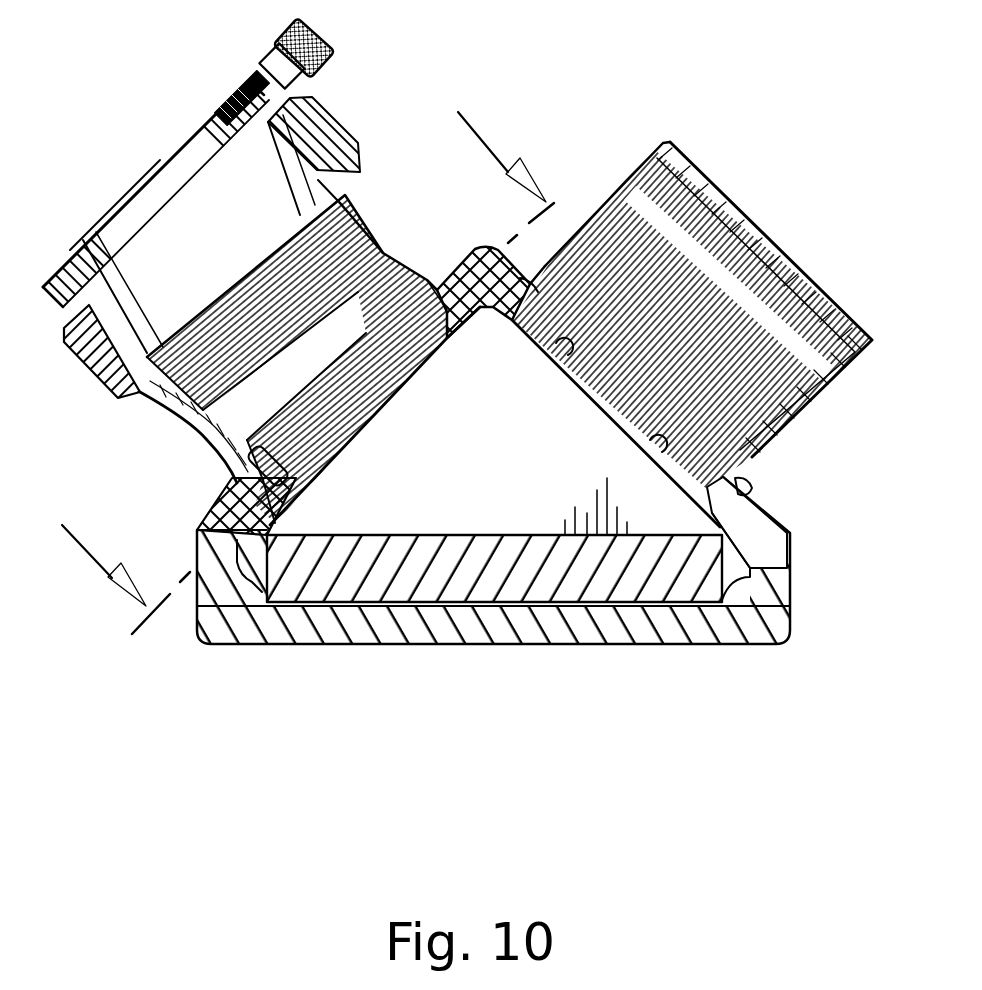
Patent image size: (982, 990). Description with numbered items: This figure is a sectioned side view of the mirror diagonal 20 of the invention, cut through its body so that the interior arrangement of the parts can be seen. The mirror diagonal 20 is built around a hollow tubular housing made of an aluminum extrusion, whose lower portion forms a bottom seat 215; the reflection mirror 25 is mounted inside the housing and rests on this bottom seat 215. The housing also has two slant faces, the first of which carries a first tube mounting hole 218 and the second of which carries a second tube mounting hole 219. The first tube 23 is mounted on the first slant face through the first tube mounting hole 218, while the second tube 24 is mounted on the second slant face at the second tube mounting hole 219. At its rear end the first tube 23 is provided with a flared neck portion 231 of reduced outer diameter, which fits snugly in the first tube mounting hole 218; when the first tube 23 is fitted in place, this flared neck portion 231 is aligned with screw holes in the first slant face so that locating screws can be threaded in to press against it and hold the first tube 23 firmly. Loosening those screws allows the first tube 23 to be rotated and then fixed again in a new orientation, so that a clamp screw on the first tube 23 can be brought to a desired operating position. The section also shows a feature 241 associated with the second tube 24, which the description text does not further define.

The mirror diagonal 20 is at (588, 671).
The bottom seat 215 is at (442, 613).
The first tube mounting hole 218 is at (257, 467).
The second tube mounting hole 219 is at (742, 484).
The first tube 23 is at (222, 210).
The flared neck portion 231 is at (268, 530).
The second tube 24 is at (707, 203).
The cap shoulder 241 is at (533, 270).
The reflection mirror 25 is at (300, 580).